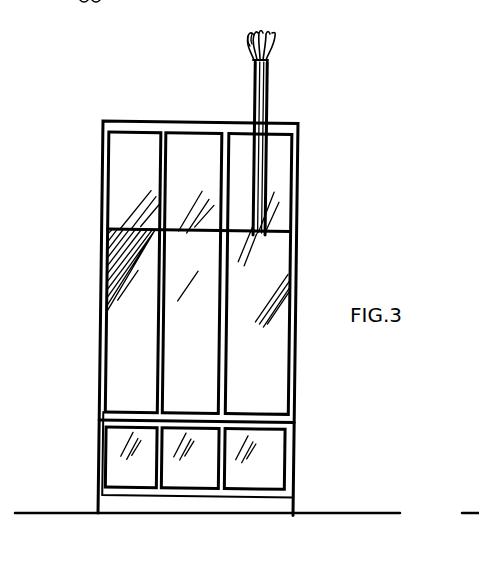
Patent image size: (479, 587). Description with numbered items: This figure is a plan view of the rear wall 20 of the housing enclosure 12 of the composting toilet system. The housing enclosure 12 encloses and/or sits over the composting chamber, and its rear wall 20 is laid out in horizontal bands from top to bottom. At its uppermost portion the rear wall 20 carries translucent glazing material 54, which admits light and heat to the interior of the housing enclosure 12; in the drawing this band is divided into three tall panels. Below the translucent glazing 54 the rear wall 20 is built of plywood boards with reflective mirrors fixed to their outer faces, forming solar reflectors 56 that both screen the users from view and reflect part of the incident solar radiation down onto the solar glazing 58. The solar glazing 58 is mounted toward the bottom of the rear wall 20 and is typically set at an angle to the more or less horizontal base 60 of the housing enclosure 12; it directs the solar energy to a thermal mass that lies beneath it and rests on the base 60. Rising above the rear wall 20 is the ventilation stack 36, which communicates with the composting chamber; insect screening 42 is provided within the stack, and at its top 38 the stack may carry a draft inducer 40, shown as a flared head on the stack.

The housing enclosure 12 is at (62, 353).
The rear wall 20 is at (248, 347).
The ventilation stack 36 is at (253, 100).
The top of ventilation stack 38 is at (272, 57).
The draft inducer 40 is at (250, 42).
The insect screening 42 is at (272, 88).
The translucent glazing material 54 is at (190, 165).
The solar reflectors 56 is at (192, 392).
The solar glazing 58 is at (124, 460).
The base 60 is at (160, 514).